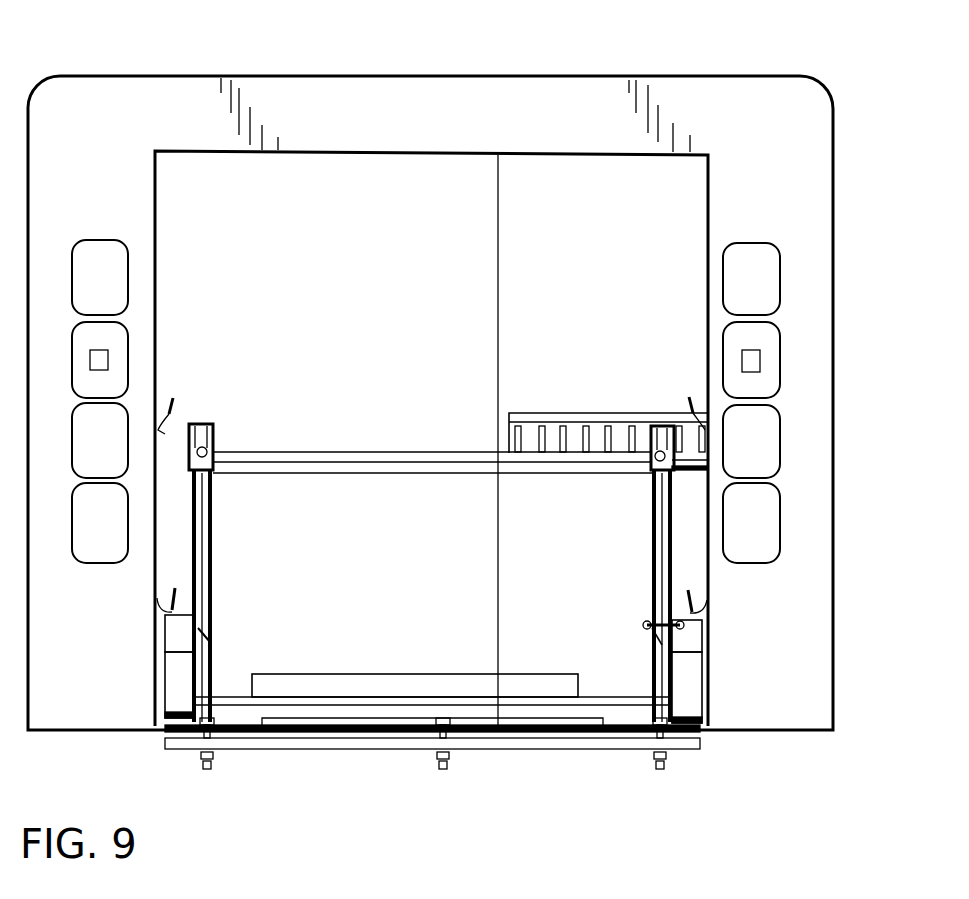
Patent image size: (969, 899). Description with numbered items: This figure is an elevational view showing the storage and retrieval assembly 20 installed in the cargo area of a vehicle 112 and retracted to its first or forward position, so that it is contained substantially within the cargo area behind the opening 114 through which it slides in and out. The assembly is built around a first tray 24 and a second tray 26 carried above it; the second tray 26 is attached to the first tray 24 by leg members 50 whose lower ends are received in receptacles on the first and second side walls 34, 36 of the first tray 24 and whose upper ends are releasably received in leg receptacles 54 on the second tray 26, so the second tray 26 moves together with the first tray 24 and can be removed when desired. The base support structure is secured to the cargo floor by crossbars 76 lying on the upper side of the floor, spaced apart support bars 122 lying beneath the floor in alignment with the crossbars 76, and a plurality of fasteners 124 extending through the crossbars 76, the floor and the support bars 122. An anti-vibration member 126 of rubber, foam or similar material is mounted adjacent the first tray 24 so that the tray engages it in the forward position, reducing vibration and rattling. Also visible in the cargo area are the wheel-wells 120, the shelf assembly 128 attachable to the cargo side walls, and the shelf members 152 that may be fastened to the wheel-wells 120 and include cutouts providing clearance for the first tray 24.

The vehicle 112 is at (625, 78).
The opening 114 is at (665, 220).
The storage and retrieval assembly 20 is at (442, 418).
The second tray 26 is at (362, 474).
The leg members 50 is at (205, 570).
The leg receptacles 54 is at (210, 452).
The shelf assembly 128 is at (178, 410).
The shelf member 152 is at (160, 612).
The wheel-wells 120 is at (168, 650).
The second side wall 36 is at (175, 694).
The first side wall 34 is at (692, 693).
The first tray 24 is at (220, 695).
The anti-vibration member 126 is at (390, 686).
The crossbars 76 is at (623, 732).
The support bars 122 is at (702, 742).
The fasteners 124 is at (210, 735).